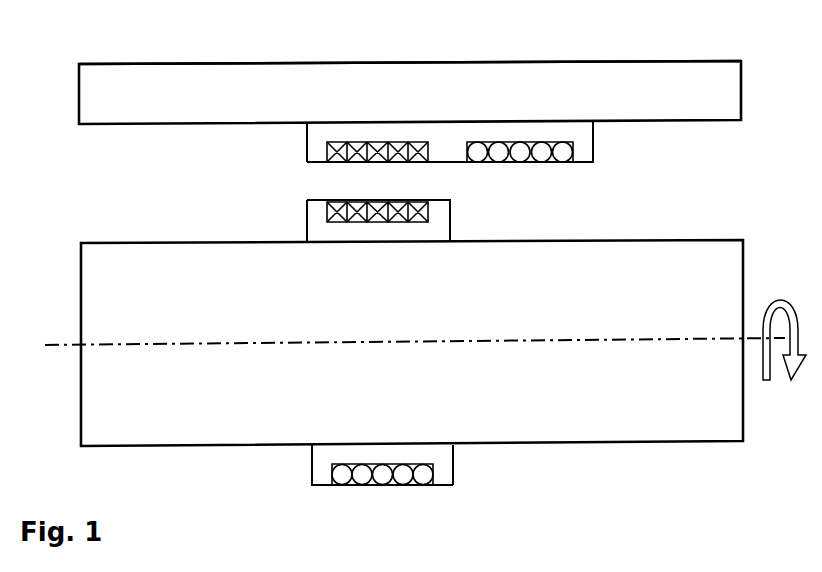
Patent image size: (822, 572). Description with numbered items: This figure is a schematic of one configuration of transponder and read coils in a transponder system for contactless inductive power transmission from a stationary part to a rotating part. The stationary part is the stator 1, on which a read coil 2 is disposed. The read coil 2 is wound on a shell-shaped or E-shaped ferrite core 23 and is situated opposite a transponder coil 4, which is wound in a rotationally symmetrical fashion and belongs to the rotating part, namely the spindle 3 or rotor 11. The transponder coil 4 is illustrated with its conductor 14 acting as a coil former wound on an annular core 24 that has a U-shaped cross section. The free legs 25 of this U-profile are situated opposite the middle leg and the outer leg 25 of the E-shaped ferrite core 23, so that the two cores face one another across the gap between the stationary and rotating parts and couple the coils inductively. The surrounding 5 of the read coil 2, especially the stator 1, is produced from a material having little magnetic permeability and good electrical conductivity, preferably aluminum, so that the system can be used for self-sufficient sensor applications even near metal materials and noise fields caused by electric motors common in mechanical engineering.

The stator 1 is at (737, 95).
The surrounding 5 is at (294, 68).
The conductor 14 is at (404, 134).
The read coil 2 is at (553, 167).
The transponder coil 4 is at (438, 202).
The ferrite core 23 is at (467, 215).
The free legs 25 is at (294, 163).
The annular core 24 is at (296, 467).
The spindle 3 is at (425, 366).
The rotor 11 is at (648, 432).